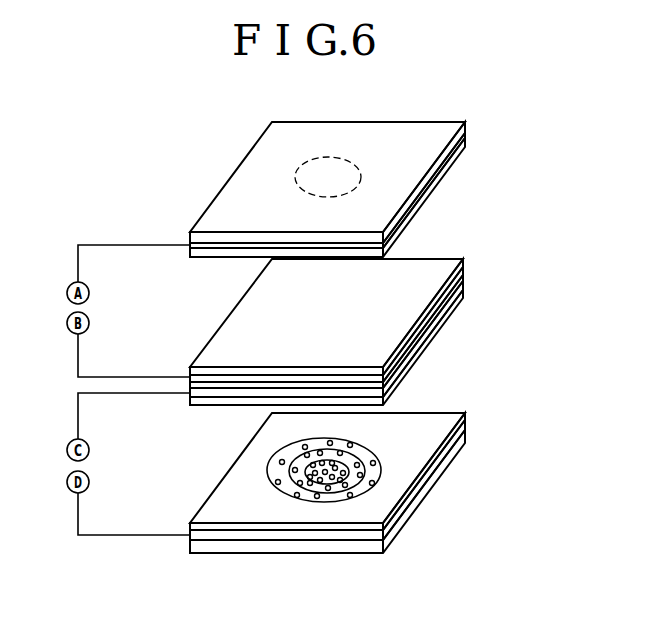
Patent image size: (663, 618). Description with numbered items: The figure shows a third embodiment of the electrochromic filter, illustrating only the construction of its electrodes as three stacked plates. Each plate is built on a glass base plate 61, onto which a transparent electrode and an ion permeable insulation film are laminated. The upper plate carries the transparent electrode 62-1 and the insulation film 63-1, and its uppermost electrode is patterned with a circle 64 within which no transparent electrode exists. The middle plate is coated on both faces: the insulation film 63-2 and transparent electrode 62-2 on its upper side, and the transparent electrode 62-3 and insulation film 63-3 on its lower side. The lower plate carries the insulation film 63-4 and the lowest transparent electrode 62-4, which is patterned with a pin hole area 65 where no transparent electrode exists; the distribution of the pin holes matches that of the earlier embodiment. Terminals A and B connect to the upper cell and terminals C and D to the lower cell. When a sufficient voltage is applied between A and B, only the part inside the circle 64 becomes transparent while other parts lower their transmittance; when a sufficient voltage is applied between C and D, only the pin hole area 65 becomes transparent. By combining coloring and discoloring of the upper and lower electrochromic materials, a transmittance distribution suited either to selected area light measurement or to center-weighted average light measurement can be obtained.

The glass base plate 61 is at (466, 126).
The transparent electrode 62-1 is at (466, 133).
The ion permeable insulation film 63-1 is at (466, 140).
The ion permeable insulation film 63-2 is at (464, 266).
The transparent electrode 62-2 is at (464, 272).
The transparent electrode 62-3 is at (464, 285).
The ion permeable insulation film 63-3 is at (464, 293).
The ion permeable insulation film 63-4 is at (464, 417).
The transparent electrode 62-4 is at (464, 425).
The circle pattern 64 is at (293, 176).
The pin hole area 65 is at (381, 473).